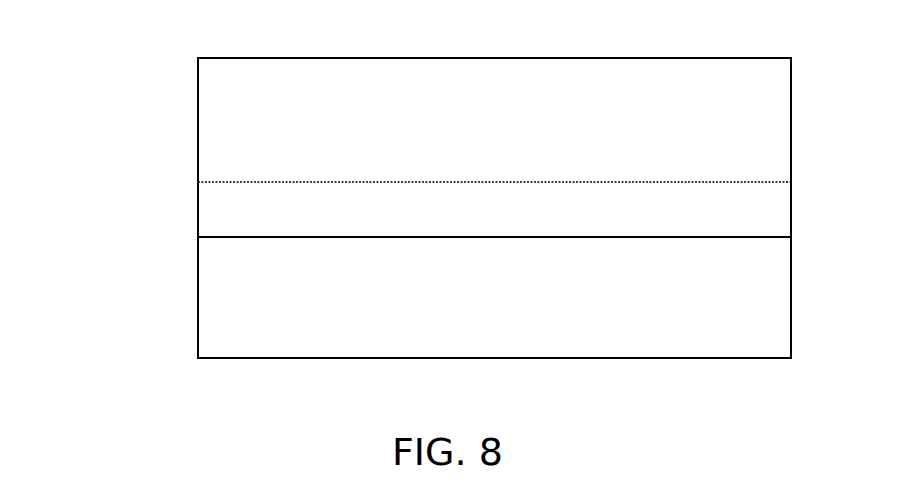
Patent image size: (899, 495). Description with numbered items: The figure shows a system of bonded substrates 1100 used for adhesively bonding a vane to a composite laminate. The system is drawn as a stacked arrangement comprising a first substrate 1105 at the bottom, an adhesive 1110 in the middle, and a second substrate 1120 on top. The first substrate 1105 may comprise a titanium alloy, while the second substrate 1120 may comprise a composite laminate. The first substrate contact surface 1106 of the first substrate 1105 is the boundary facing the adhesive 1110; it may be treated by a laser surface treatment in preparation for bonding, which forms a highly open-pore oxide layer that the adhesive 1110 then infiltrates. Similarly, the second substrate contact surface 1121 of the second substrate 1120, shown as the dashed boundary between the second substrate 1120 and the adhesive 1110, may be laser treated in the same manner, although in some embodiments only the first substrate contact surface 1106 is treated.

The system of bonded substrates 1100 is at (96, 71).
The first substrate 1105 is at (257, 345).
The first substrate contact surface 1106 is at (588, 239).
The adhesive 1110 is at (197, 210).
The second substrate 1120 is at (767, 103).
The second substrate contact surface 1121 is at (660, 182).